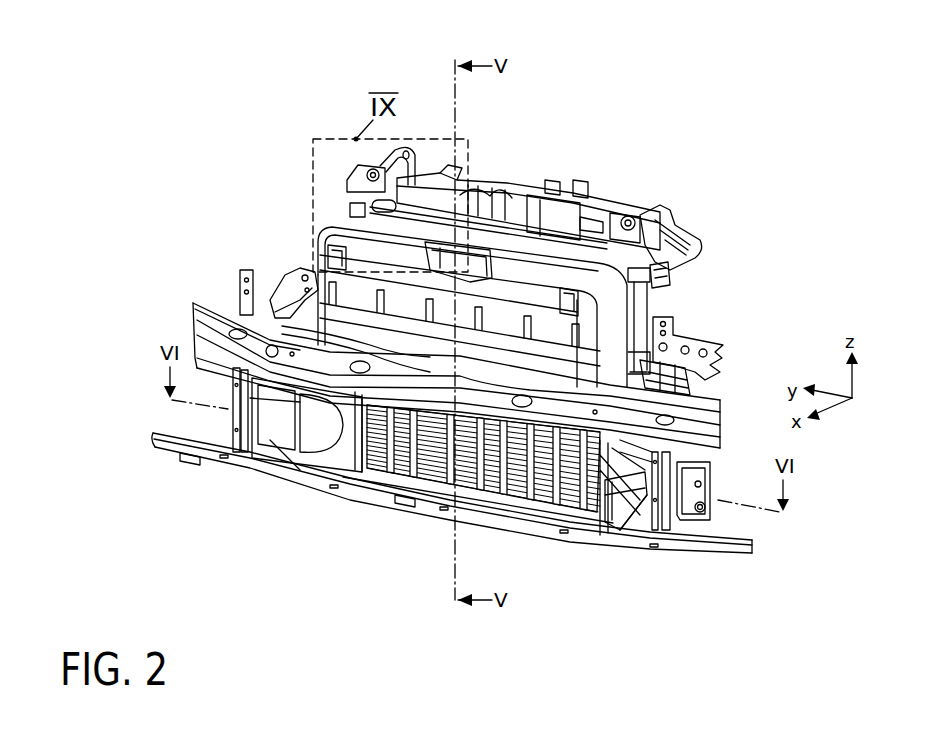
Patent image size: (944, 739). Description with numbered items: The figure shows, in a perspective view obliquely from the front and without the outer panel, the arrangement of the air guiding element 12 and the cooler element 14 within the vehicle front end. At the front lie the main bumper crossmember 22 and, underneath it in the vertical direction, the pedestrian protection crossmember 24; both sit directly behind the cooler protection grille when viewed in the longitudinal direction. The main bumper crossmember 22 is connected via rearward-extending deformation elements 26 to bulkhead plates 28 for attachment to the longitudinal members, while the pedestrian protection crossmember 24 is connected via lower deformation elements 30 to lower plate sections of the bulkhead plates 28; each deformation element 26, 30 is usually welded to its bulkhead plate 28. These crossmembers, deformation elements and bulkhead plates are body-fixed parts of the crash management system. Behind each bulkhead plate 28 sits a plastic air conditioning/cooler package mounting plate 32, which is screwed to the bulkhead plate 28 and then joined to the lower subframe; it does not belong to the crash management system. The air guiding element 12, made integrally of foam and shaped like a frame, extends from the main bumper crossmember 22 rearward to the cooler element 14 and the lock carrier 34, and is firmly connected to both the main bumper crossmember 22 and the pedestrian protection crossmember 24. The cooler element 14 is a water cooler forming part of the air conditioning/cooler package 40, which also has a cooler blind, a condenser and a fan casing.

The air guiding element 12 is at (350, 224).
The cooler element 14 is at (636, 311).
The main bumper crossmember 22 is at (207, 330).
The pedestrian protection crossmember 24 is at (180, 443).
The deformation element 26 is at (680, 375).
The bulkhead plate 28 is at (695, 352).
The deformation element 30 is at (634, 514).
The air conditioning/cooler package mounting plate 32 is at (700, 493).
The lock carrier 34 is at (590, 213).
The air conditioning/cooler package 40 is at (672, 274).